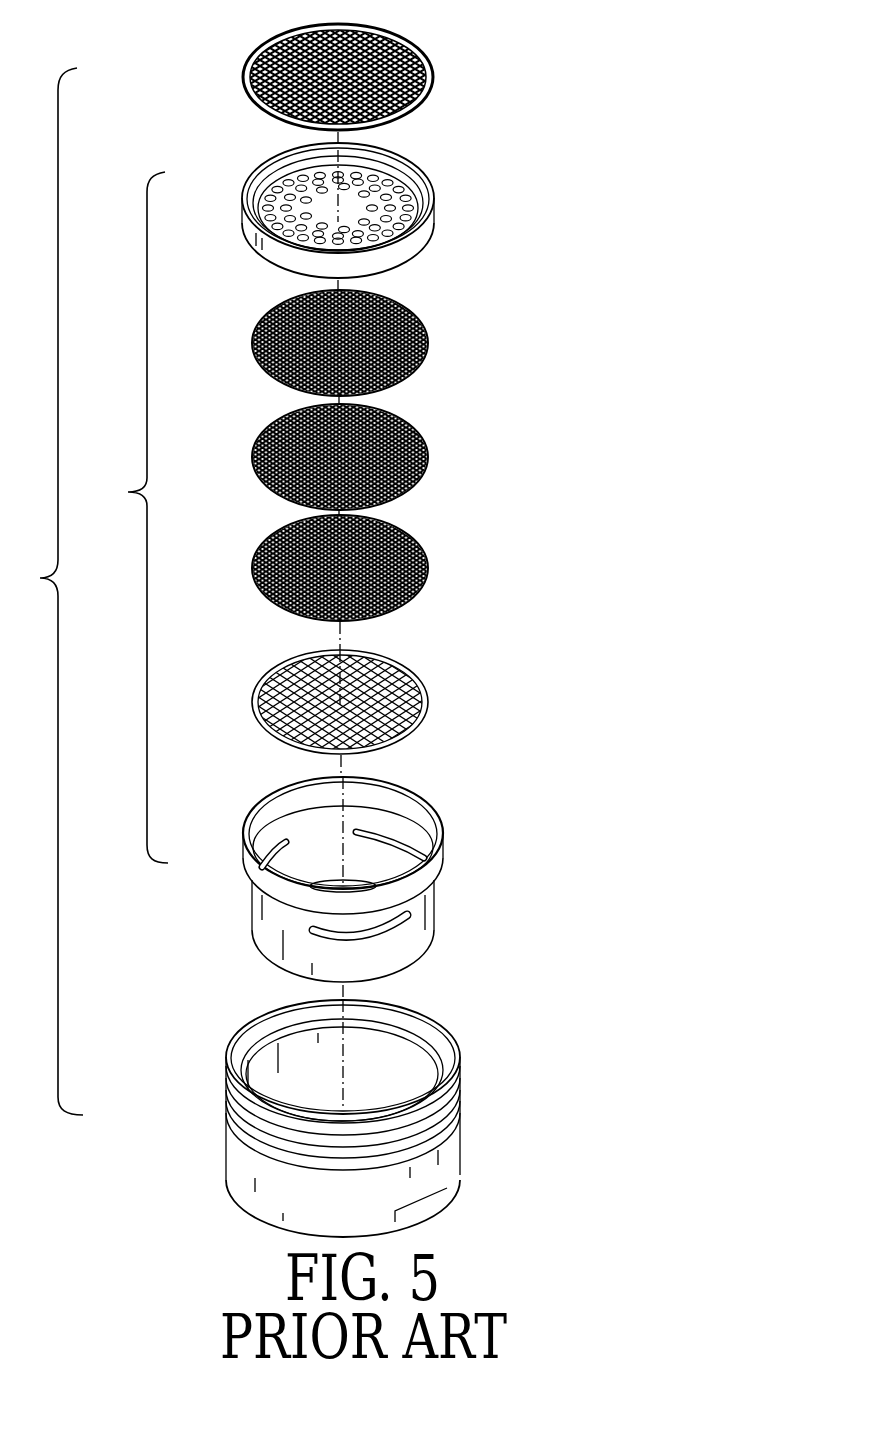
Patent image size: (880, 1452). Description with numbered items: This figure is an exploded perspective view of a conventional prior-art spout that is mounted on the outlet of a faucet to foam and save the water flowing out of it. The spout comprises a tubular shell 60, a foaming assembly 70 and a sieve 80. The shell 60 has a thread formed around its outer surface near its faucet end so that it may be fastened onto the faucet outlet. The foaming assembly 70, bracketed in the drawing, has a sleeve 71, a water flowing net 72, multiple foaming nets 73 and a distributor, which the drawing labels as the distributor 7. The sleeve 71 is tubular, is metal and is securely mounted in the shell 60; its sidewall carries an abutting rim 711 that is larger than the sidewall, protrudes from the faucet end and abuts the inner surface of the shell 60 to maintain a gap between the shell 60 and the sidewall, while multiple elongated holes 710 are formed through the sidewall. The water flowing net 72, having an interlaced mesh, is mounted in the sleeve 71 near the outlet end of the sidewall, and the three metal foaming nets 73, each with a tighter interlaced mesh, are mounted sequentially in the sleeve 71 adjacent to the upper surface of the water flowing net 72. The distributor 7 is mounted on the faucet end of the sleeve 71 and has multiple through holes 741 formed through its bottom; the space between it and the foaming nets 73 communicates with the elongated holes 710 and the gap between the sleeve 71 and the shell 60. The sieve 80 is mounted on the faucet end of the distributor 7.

The shell 60 is at (448, 1150).
The foaming assembly 70 is at (127, 517).
The sleeve 71 is at (347, 880).
The elongated holes 710 is at (401, 925).
The abutting rim 711 is at (423, 880).
The water flowing net 72 is at (421, 718).
The foaming nets 73 is at (432, 357).
The perforated plate / cap 7 is at (373, 213).
The through holes 741 is at (401, 198).
The sieve 80 is at (440, 108).